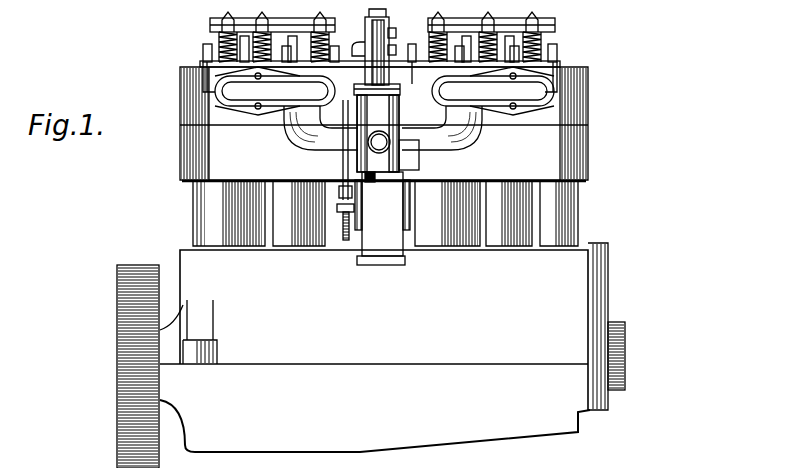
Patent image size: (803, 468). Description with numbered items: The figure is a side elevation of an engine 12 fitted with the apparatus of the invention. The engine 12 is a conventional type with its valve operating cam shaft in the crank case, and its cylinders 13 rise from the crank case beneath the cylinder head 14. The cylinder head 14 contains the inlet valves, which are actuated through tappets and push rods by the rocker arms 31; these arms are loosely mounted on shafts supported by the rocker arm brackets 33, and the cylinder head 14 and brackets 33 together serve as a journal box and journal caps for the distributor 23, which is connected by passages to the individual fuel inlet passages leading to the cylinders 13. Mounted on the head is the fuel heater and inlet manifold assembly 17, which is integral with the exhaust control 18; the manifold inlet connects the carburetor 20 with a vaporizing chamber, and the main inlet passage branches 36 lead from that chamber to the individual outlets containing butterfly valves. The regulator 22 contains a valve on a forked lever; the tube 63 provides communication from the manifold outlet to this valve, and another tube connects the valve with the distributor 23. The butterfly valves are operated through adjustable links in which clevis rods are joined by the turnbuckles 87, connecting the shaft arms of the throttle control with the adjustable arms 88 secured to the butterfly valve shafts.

The engine 12 is at (470, 319).
The cylinders 13 is at (195, 211).
The cylinder head 14 is at (589, 95).
The fuel heater and inlet manifold assembly 17 is at (342, 157).
The exhaust control 18 is at (382, 218).
The carburetor 20 is at (388, 90).
The regulator 22 is at (390, 54).
The distributor 23 is at (412, 44).
The rocker arms 31 is at (224, 19).
The rocker arm brackets 33 is at (222, 37).
The main inlet passage branches 36 is at (384, 108).
The tube 63 is at (390, 72).
The turnbuckles 87 is at (203, 57).
The adjustable arms 88 is at (203, 78).